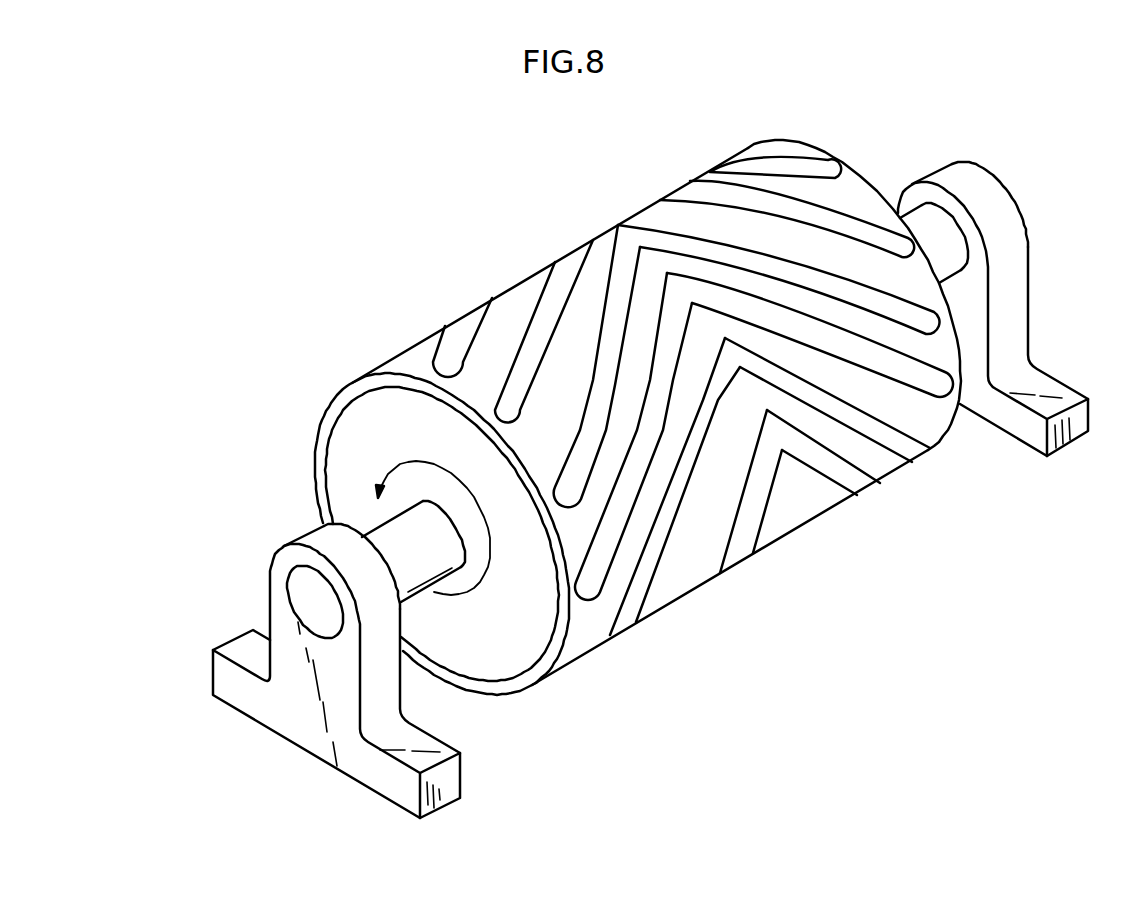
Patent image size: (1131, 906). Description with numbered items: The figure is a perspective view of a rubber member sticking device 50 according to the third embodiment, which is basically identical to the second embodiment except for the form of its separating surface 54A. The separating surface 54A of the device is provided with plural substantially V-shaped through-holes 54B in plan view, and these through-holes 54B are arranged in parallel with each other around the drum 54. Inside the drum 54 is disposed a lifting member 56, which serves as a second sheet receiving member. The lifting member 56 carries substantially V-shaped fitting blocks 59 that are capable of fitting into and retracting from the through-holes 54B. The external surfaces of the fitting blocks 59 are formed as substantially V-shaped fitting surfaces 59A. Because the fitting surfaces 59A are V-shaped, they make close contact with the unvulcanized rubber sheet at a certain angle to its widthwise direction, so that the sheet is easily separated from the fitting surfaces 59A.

The rubber member sticking device 50 is at (305, 217).
The drum 54 is at (577, 618).
The separating surface 54A is at (665, 507).
The through-holes 54B is at (663, 570).
The lifting member 56 is at (895, 436).
The fitting blocks 59 is at (877, 435).
The fitting surfaces 59A is at (849, 420).